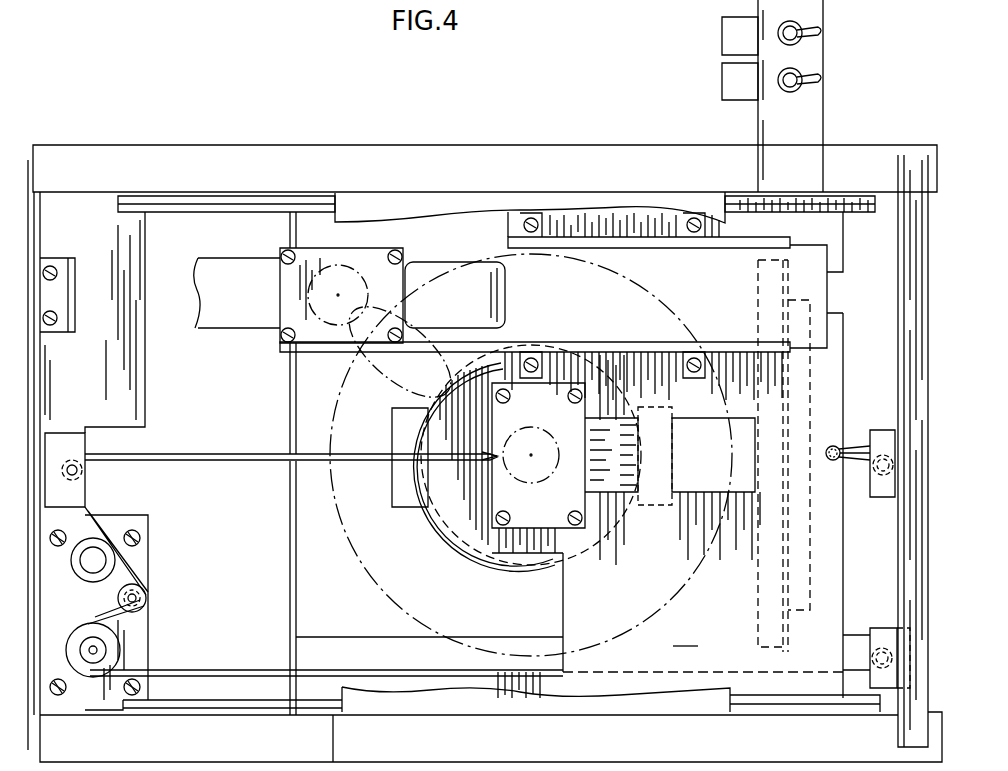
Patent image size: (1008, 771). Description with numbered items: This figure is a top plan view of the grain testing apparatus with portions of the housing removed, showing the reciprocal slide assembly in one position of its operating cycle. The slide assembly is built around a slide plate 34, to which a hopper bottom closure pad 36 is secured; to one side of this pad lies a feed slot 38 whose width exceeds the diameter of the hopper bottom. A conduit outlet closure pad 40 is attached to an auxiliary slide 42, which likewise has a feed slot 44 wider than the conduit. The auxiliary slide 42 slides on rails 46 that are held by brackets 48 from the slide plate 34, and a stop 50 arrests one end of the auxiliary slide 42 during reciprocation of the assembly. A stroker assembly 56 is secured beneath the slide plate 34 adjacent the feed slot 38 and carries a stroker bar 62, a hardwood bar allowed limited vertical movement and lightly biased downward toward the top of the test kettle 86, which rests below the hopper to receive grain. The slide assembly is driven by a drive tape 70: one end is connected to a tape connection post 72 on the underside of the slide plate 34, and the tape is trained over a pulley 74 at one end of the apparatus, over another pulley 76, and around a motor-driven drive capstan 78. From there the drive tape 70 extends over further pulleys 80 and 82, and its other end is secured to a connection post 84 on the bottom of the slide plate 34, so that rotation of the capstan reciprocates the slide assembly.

The slide plate 34 is at (485, 381).
The hopper bottom closure pad 36 is at (503, 438).
The feed slot 38 is at (713, 418).
The conduit outlet closure pad 40 is at (308, 258).
The auxiliary slide 42 is at (424, 242).
The feed slot 44 is at (437, 270).
The rails 46 is at (666, 242).
The brackets 48 is at (708, 357).
The stop 50 is at (75, 296).
The stroker assembly 56 is at (756, 588).
The stroker bar 62 is at (810, 598).
The drive tape 70 is at (270, 461).
The tape connection post 72 is at (500, 462).
The pulley 74 is at (87, 475).
The pulley 76 is at (148, 600).
The drive capstan 78 is at (128, 648).
The pulley 80 is at (869, 660).
The pulley 82 is at (868, 472).
The connection post 84 is at (840, 449).
The test kettle 86 is at (468, 538).